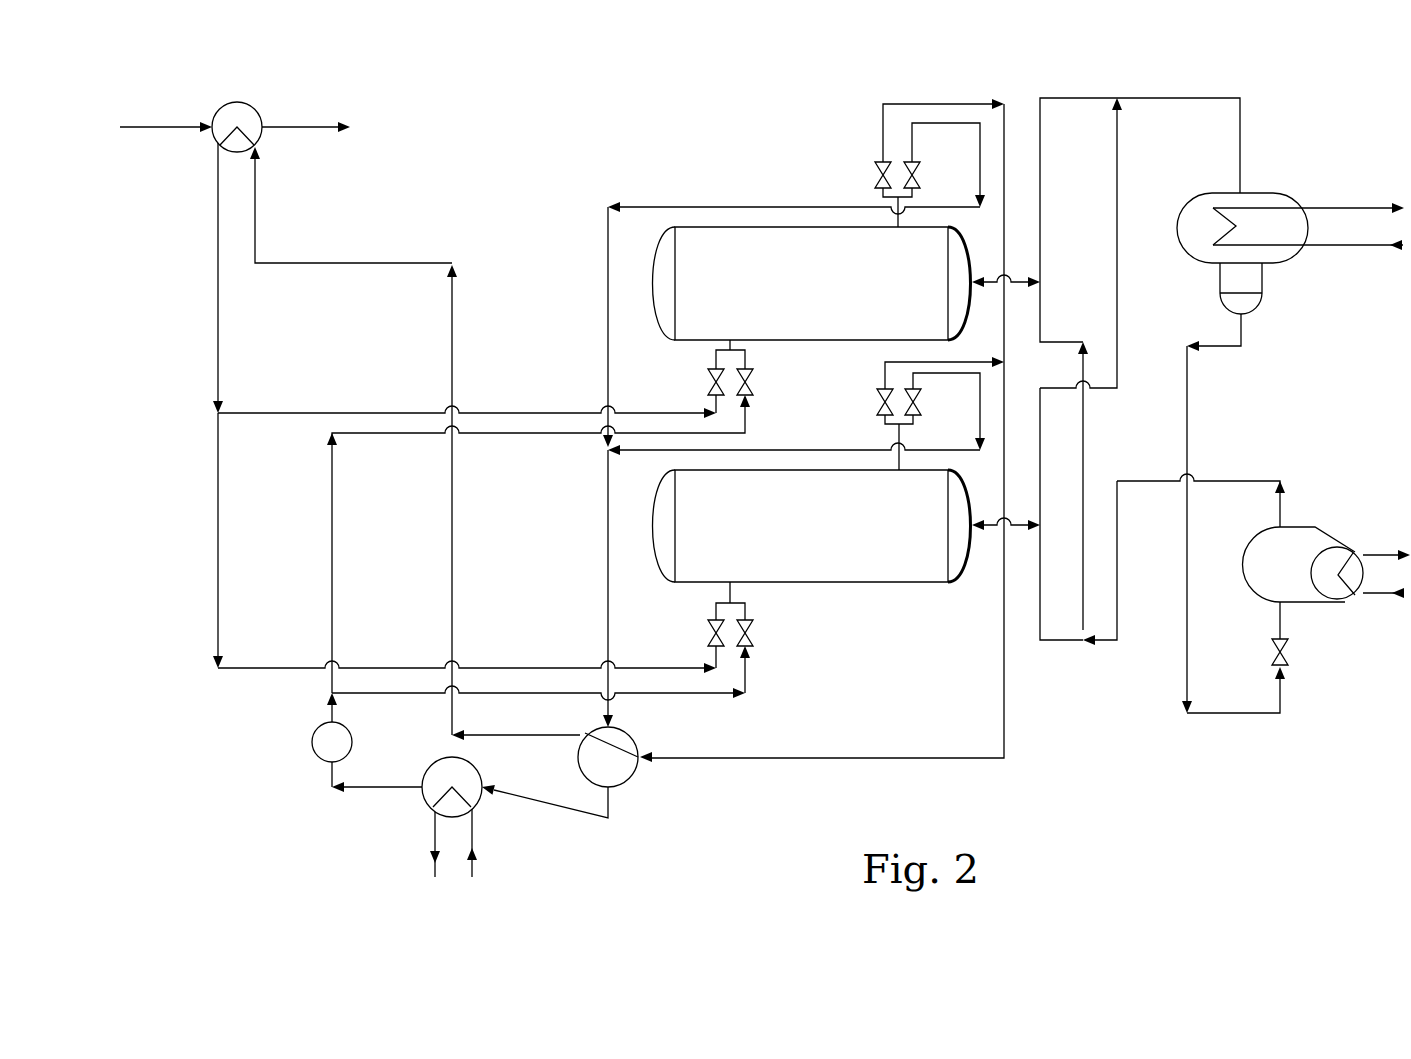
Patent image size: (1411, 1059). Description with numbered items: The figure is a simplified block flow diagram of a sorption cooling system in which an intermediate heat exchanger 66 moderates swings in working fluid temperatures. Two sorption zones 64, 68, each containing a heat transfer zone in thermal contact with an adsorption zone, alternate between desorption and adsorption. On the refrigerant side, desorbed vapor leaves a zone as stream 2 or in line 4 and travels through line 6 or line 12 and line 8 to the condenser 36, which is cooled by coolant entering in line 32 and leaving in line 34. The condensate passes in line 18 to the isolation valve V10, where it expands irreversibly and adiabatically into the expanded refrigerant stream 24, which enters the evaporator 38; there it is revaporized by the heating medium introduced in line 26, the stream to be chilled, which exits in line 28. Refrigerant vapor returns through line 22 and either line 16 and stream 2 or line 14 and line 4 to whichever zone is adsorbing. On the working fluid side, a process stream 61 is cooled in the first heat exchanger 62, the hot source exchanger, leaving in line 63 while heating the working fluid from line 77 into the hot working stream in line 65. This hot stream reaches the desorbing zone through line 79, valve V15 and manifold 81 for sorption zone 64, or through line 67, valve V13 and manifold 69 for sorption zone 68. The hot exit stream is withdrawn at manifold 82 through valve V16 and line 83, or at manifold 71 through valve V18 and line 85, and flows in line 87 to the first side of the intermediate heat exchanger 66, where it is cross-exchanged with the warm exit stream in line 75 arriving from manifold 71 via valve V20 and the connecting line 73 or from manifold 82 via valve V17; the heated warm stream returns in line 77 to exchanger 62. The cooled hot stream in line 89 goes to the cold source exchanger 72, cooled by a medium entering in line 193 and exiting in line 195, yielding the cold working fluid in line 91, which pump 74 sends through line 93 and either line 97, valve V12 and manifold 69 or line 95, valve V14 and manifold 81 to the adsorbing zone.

The desorbed vapor stream 2 is at (1012, 282).
The line 4 is at (1013, 527).
The line 6 is at (1040, 174).
The line 8 is at (1176, 98).
The line 12 is at (1118, 220).
The line 14 is at (1040, 640).
The line 16 is at (1040, 316).
The line 18 is at (1242, 330).
The line 22 is at (1243, 481).
The expanded refrigerant stream 24 is at (1281, 624).
The line 26 is at (1368, 593).
The line 28 is at (1375, 555).
The line 32 is at (1345, 247).
The line 34 is at (1334, 208).
The condenser 36 is at (1256, 193).
The evaporator 38 is at (1322, 527).
The process stream 61 is at (170, 127).
The first heat exchanger 62 is at (243, 75).
The line 63 is at (302, 128).
The sorption zone 64 is at (812, 283).
The line 65 is at (218, 318).
The intermediate heat exchanger 66 is at (636, 778).
The line 67 is at (218, 588).
The sorption zone 68 is at (812, 526).
The manifold 69 is at (746, 608).
The manifold 71 is at (886, 424).
The cold source exchanger 72 is at (478, 770).
The line 73 is at (987, 353).
The pump 74 is at (316, 748).
The line 75 is at (1010, 82).
The line 77 is at (256, 213).
The line 79 is at (288, 413).
The manifold 81 is at (746, 357).
The manifold 82 is at (880, 197).
The line 83 is at (608, 244).
The line 85 is at (980, 438).
The line 87 is at (607, 532).
The line 89 is at (608, 818).
The line 91 is at (365, 788).
The line 93 is at (328, 703).
The line 95 is at (332, 498).
The line 97 is at (675, 693).
The line 193 is at (472, 875).
The line 195 is at (435, 875).
The isolation valve V10 is at (1288, 656).
The valve V12 is at (748, 636).
The valve V13 is at (708, 632).
The valve V14 is at (748, 398).
The valve V15 is at (708, 384).
The valve V16 is at (918, 162).
The valve V17 is at (882, 162).
The valve V18 is at (918, 404).
The valve V20 is at (878, 400).